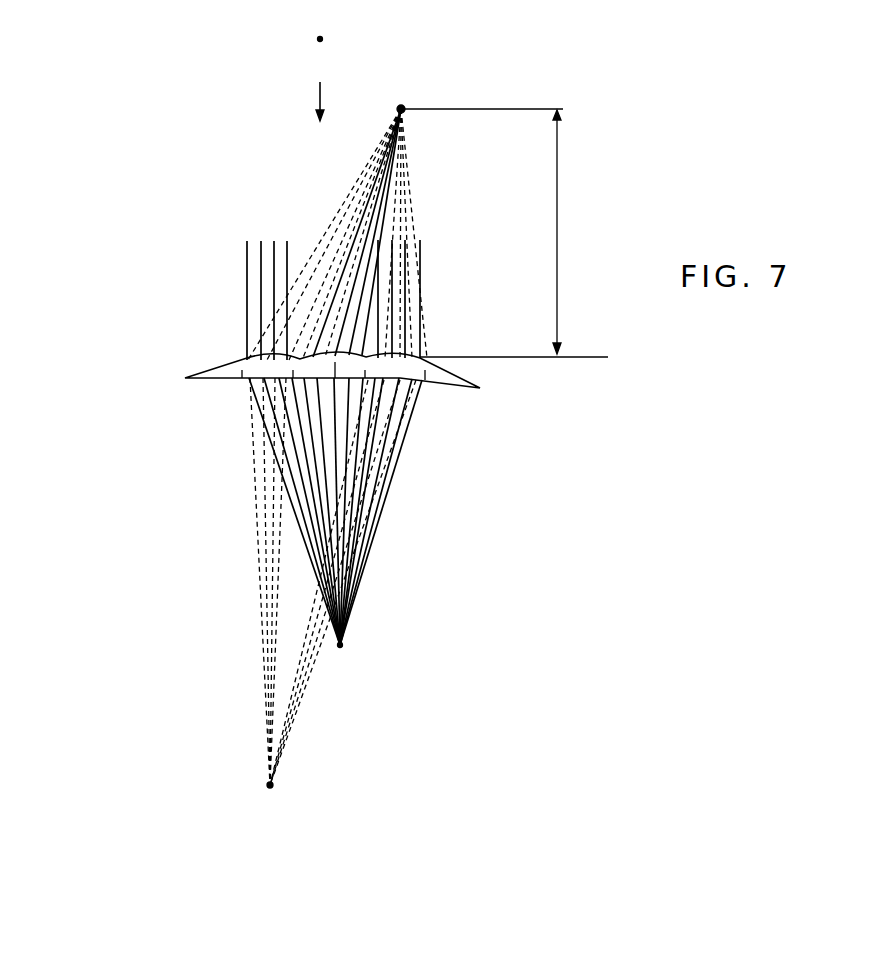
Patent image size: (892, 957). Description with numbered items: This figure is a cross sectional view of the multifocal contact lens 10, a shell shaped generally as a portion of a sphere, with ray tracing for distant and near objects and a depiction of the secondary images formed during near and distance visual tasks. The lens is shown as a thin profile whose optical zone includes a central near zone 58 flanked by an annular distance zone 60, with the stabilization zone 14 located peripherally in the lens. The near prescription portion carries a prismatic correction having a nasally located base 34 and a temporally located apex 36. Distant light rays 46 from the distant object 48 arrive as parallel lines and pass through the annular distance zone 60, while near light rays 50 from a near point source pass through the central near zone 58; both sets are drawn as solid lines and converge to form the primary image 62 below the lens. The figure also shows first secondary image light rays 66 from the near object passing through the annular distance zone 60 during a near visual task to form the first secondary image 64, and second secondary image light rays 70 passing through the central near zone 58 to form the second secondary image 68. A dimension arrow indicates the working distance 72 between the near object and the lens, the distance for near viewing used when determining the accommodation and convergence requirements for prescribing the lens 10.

The multifocal contact lens 10 is at (193, 377).
The stabilization zone 14 is at (213, 360).
The nasally located base 34 is at (363, 355).
The temporally located apex 36 is at (304, 360).
The distant light rays 46 is at (243, 258).
The distant object 48 is at (322, 39).
The near light rays 50 is at (380, 215).
The central near zone 58 is at (333, 360).
The annular distance zone 60 is at (263, 368).
The primary image 62 is at (340, 645).
The first secondary image 64 is at (265, 697).
The first secondary image light rays 66 is at (272, 783).
The second secondary image 68 is at (385, 577).
The second secondary image light rays 70 is at (378, 540).
The working distance 72 is at (557, 150).